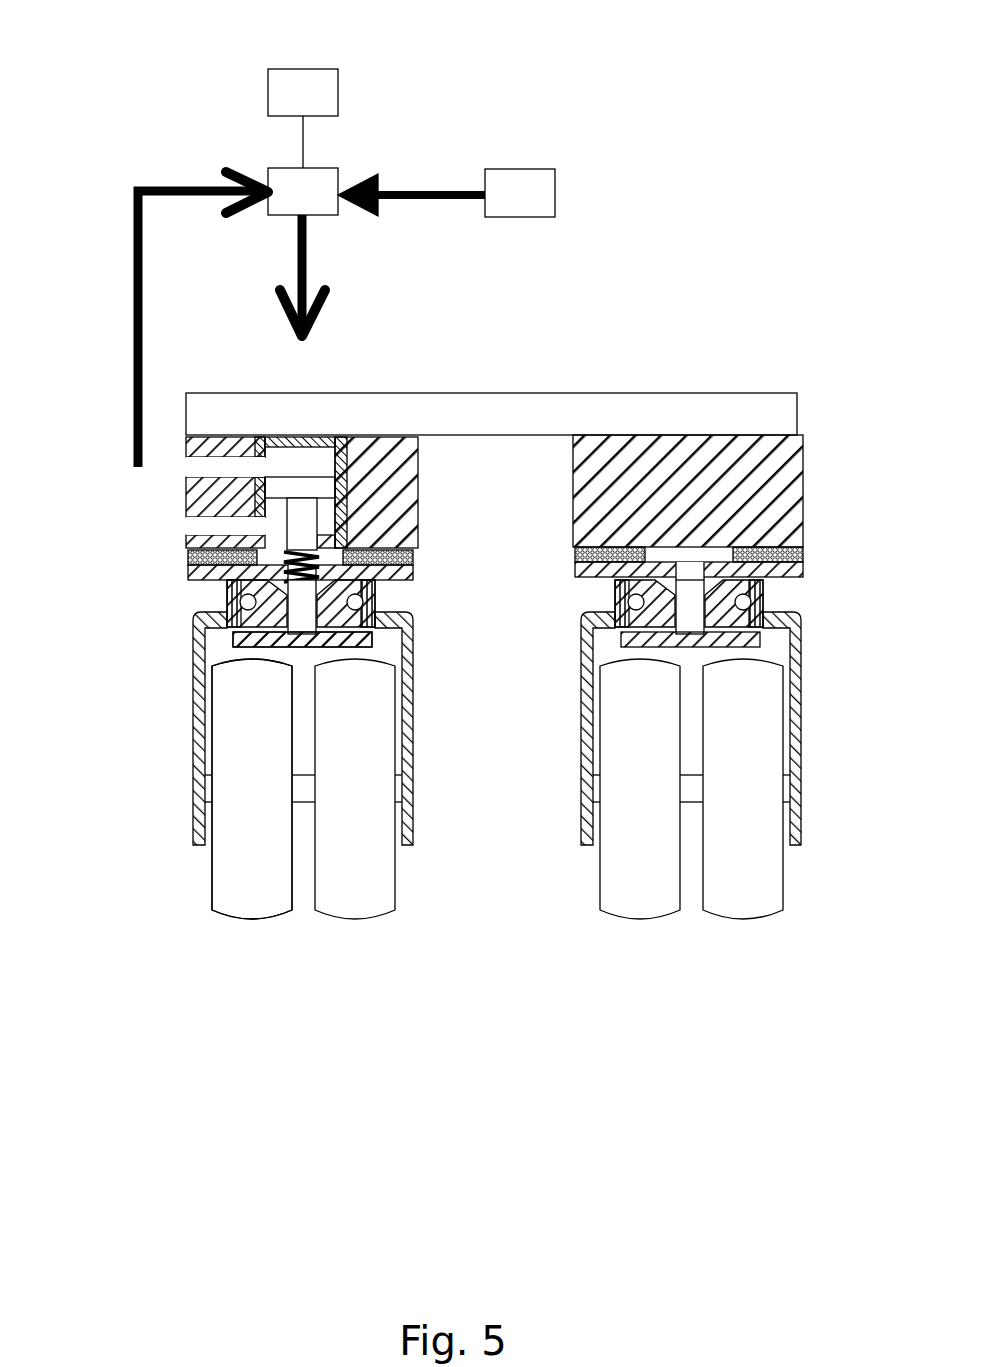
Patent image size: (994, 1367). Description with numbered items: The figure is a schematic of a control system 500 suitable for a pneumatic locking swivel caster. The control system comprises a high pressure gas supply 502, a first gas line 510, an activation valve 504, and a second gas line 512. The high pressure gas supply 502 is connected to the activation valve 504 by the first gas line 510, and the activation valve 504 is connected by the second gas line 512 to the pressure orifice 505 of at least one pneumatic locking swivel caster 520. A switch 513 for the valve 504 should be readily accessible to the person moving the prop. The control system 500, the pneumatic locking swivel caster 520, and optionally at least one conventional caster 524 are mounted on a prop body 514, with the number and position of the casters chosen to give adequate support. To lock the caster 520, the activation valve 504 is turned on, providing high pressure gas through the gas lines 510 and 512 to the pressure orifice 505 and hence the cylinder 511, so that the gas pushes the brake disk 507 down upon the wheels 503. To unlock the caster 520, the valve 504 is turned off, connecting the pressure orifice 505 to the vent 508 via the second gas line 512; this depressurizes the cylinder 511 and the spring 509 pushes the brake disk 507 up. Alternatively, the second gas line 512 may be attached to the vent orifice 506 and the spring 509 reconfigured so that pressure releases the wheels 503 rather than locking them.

The control system 500 is at (448, 493).
The high pressure gas supply 502 is at (520, 193).
The wheels 503 is at (206, 873).
The activation valve 504 is at (303, 191).
The pressure orifice 505 is at (152, 467).
The vent orifice 506 is at (176, 530).
The brake disk 507 is at (220, 640).
The vent 508 is at (315, 275).
The spring 509 is at (270, 561).
The first gas line 510 is at (411, 191).
The cylinder 511 is at (319, 429).
The second gas line 512 is at (203, 317).
The switch 513 is at (303, 92).
The prop body 514 is at (491, 414).
The pneumatic locking swivel caster 520 is at (256, 667).
The conventional caster 524 is at (688, 707).